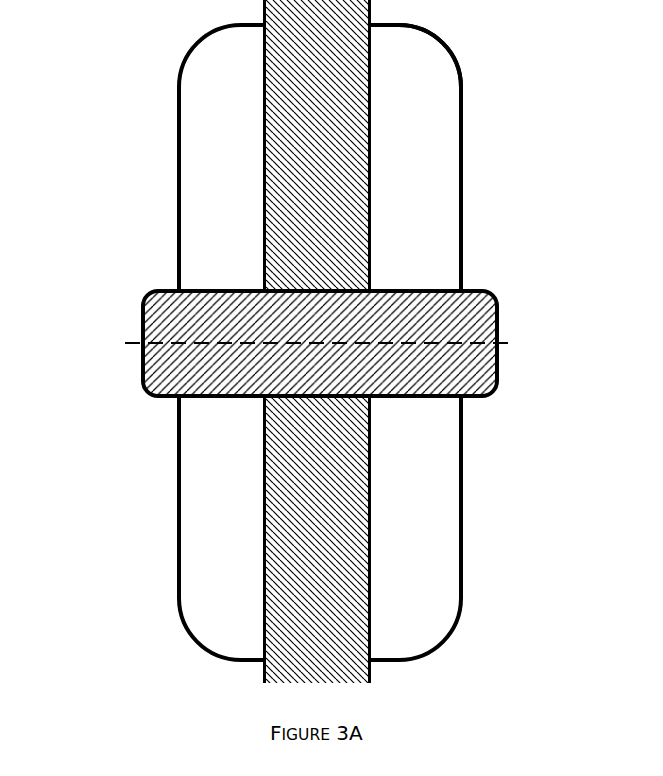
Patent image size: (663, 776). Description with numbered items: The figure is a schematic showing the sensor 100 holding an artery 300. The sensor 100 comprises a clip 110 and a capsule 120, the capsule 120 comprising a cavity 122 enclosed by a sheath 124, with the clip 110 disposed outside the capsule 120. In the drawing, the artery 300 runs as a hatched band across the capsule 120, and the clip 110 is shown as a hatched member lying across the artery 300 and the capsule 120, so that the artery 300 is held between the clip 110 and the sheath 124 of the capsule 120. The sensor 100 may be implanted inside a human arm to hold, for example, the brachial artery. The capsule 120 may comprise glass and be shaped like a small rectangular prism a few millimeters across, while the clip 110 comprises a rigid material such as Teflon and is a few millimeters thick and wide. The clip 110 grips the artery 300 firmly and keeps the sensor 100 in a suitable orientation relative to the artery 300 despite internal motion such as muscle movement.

The sensor 100 is at (322, 341).
The clip 110 is at (246, 376).
The capsule 120 is at (385, 342).
The cavity 122 is at (476, 189).
The sheath 124 is at (448, 48).
The artery 300 is at (272, 618).